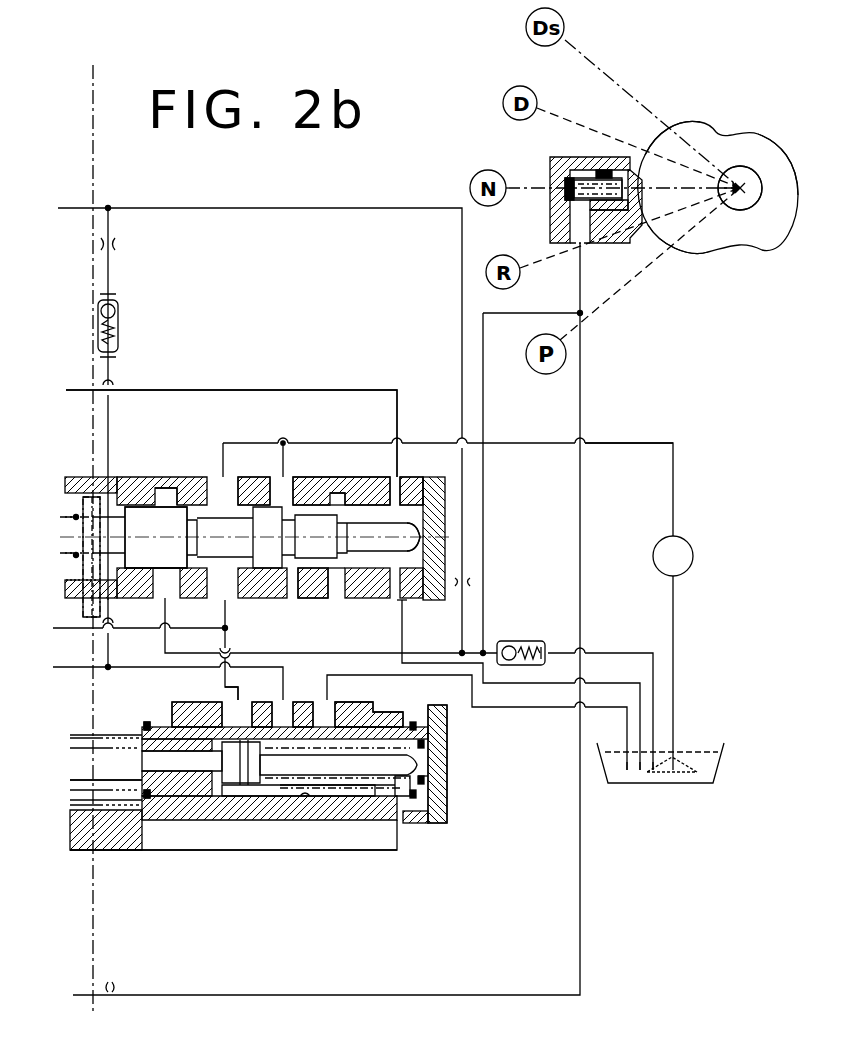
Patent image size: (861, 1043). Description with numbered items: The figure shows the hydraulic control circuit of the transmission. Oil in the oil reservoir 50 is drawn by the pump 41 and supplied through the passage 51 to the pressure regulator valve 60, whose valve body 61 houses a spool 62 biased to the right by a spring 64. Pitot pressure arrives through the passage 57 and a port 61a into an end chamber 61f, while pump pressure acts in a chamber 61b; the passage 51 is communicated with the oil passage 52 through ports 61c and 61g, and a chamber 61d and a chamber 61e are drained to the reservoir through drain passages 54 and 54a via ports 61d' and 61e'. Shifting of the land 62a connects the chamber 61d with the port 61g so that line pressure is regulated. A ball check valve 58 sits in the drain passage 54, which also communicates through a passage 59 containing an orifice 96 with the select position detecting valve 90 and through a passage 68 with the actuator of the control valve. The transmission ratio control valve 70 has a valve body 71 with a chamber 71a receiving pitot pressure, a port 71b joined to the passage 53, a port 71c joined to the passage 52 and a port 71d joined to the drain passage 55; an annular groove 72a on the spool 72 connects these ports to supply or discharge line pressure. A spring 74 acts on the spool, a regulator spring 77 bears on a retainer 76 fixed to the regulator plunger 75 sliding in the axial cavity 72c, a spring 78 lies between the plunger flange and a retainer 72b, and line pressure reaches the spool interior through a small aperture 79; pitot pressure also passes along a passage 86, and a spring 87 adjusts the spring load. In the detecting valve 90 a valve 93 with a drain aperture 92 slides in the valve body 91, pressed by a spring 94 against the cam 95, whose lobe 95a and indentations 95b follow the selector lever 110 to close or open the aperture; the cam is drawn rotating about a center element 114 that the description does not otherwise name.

The pump 41 is at (698, 538).
The oil reservoir 50 is at (658, 786).
The passage 51 is at (636, 443).
The oil passage 52 is at (139, 644).
The passage 53 is at (53, 668).
The drain passage 54 is at (368, 653).
The drain passage 54a is at (622, 676).
The drain passage 55 is at (502, 709).
The passage 57 is at (205, 390).
The ball check valve 58 is at (537, 640).
The passage 59 is at (483, 400).
The pressure regulator valve 60 is at (423, 625).
The valve body 61 is at (76, 476).
The port 61a is at (401, 490).
The chamber 61b is at (296, 490).
The port 61c is at (230, 494).
The chamber 61d is at (188, 466).
The port 61d' is at (139, 631).
The chamber 61e is at (361, 454).
The port 61e' is at (318, 605).
The end chamber 61f is at (402, 524).
The port 61g is at (173, 590).
The spool 62 is at (228, 550).
The land 62a is at (154, 515).
The spring 64 is at (74, 576).
The passage 68 is at (580, 880).
The transmission ratio control valve 70 is at (446, 822).
The valve body 71 is at (178, 714).
The chamber 71a is at (404, 706).
The port 71b is at (286, 712).
The port 71c is at (233, 716).
The port 71d is at (324, 712).
The spool 72 is at (162, 812).
The annular groove 72a is at (284, 800).
The retainer 72b is at (428, 785).
The axial cavity 72c is at (358, 800).
The spring 74 is at (144, 800).
The regulator plunger 75 is at (316, 786).
The retainer 76 is at (138, 722).
The regulator spring 77 is at (118, 781).
The spring 78 is at (396, 800).
The small aperture 79 is at (224, 802).
The passage 86 is at (164, 850).
The spring 87 is at (442, 740).
The select position detecting valve 90 is at (747, 131).
The valve body 91 is at (550, 230).
The drain aperture 92 is at (612, 170).
The valve 93 is at (576, 170).
The spring 94 is at (560, 188).
The cam 95 is at (757, 229).
The lobe 95a is at (634, 226).
The indentations 95b is at (692, 130).
The orifice 96 is at (530, 296).
The selector lever 110 is at (660, 78).
The cam shaft 114 is at (740, 210).